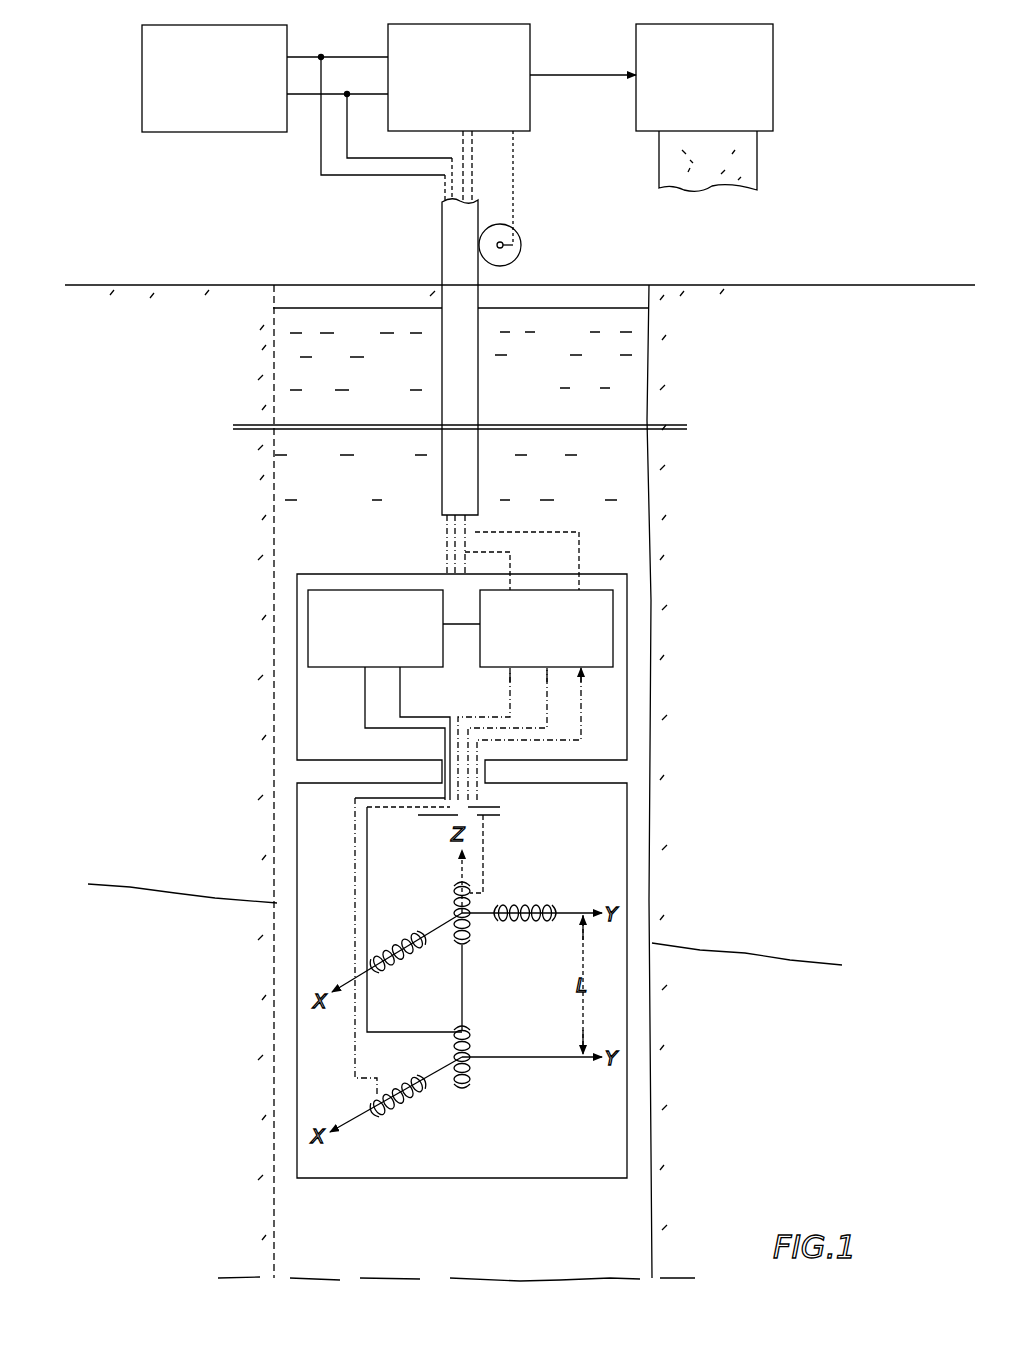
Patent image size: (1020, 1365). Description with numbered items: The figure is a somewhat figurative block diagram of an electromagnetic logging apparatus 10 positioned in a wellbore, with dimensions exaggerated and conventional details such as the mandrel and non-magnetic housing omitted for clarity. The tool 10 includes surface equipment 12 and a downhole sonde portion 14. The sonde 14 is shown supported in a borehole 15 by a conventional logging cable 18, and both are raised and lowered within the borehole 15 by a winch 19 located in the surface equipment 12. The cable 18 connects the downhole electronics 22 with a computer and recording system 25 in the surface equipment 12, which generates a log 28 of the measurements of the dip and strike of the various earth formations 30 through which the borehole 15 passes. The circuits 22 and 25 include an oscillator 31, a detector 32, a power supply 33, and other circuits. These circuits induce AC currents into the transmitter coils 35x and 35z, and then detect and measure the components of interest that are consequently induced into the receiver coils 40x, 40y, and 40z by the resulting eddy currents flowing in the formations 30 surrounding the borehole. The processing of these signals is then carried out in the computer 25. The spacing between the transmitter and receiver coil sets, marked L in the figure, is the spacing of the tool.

The logging apparatus 10 is at (172, 234).
The surface equipment 12 is at (607, 145).
The downhole sonde portion 14 is at (297, 737).
The borehole 15 is at (273, 366).
The logging cable 18 is at (442, 240).
The winch 19 is at (521, 245).
The downhole electronics 22 is at (448, 668).
The computer and recording system 25 is at (636, 41).
The log 28 is at (757, 164).
The earth formations 30 is at (768, 522).
The oscillator 31 is at (308, 624).
The detector 32 is at (613, 630).
The power supply 33 is at (207, 135).
The x transmitter coil 35x is at (408, 1098).
The z transmitter coil 35z is at (475, 1082).
The x receiver coil 40x is at (388, 962).
The y receiver coil 40y is at (525, 922).
The z receiver coil 40z is at (469, 929).